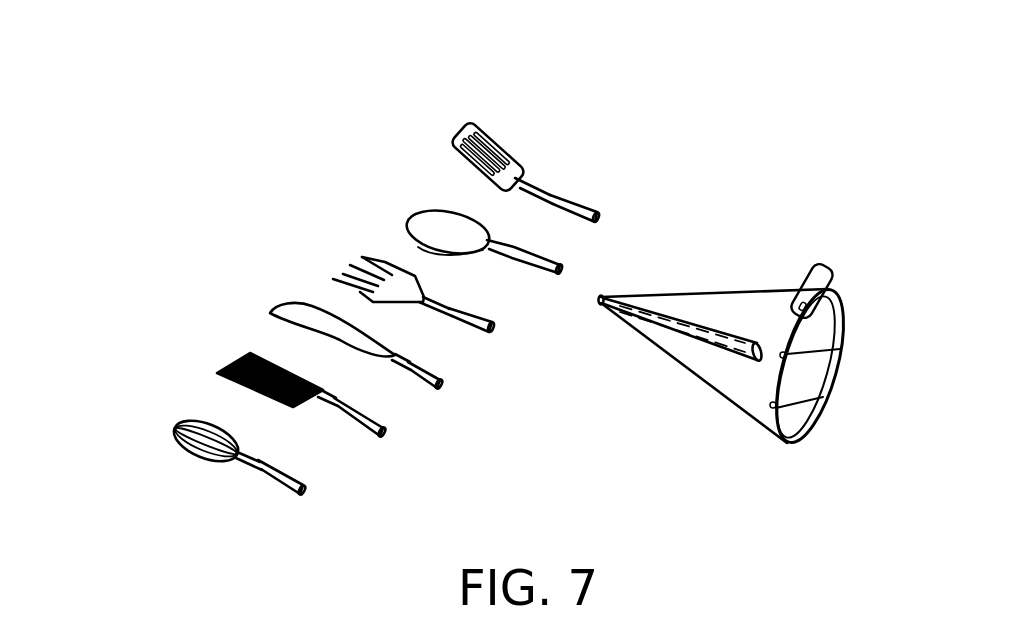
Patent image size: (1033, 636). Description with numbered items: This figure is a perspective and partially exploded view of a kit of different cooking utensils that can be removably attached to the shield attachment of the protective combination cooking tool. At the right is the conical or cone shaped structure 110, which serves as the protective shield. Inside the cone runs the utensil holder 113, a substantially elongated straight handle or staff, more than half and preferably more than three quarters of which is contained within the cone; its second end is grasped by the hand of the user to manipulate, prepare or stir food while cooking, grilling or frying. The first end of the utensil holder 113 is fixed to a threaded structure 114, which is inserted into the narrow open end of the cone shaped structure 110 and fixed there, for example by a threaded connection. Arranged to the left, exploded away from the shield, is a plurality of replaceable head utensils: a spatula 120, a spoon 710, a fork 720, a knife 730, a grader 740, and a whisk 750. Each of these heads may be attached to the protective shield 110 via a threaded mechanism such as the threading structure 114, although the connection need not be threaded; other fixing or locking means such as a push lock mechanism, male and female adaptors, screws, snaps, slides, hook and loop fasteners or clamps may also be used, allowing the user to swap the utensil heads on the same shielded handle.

The cone shaped structure 110 is at (703, 297).
The utensil holder 113 is at (730, 327).
The threaded structure 114 is at (601, 300).
The spatula 120 is at (470, 126).
The spoon 710 is at (432, 232).
The fork 720 is at (345, 265).
The knife 730 is at (290, 310).
The grader 740 is at (222, 372).
The whisk 750 is at (172, 437).